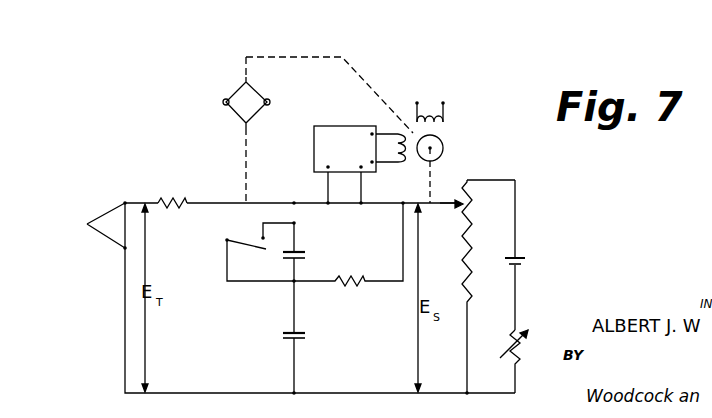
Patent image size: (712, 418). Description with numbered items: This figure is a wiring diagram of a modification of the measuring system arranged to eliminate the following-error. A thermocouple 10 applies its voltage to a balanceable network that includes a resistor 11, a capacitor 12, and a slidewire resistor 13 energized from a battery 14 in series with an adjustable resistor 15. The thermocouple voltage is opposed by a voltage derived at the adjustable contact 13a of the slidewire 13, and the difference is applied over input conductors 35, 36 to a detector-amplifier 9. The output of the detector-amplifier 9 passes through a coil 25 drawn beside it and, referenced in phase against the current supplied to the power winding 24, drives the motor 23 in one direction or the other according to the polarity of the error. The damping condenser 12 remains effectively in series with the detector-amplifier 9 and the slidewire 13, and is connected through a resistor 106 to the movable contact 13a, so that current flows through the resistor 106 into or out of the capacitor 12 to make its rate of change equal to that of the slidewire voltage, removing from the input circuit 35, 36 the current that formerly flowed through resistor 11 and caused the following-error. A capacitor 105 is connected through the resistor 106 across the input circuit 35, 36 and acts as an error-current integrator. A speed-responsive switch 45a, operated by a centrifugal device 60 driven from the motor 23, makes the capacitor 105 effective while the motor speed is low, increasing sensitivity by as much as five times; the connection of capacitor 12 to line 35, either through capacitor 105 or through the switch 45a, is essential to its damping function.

The detector-amplifier 9 is at (343, 123).
The thermocouple 10 is at (87, 223).
The resistor 11 is at (163, 197).
The capacitor 12 is at (281, 333).
The slidewire resistor 13 is at (471, 278).
The adjustable contact 13a is at (449, 207).
The battery 14 is at (526, 263).
The adjustable resistor 15 is at (522, 349).
The motor 23 is at (444, 149).
The power winding 24 is at (445, 123).
The relay coil 25 is at (400, 164).
The input conductor 35 is at (327, 187).
The input conductor 36 is at (361, 196).
The speed-responsive switch 45a is at (247, 246).
The centrifugal device 60 is at (236, 92).
The capacitor 105 is at (306, 255).
The resistor 106 is at (345, 291).